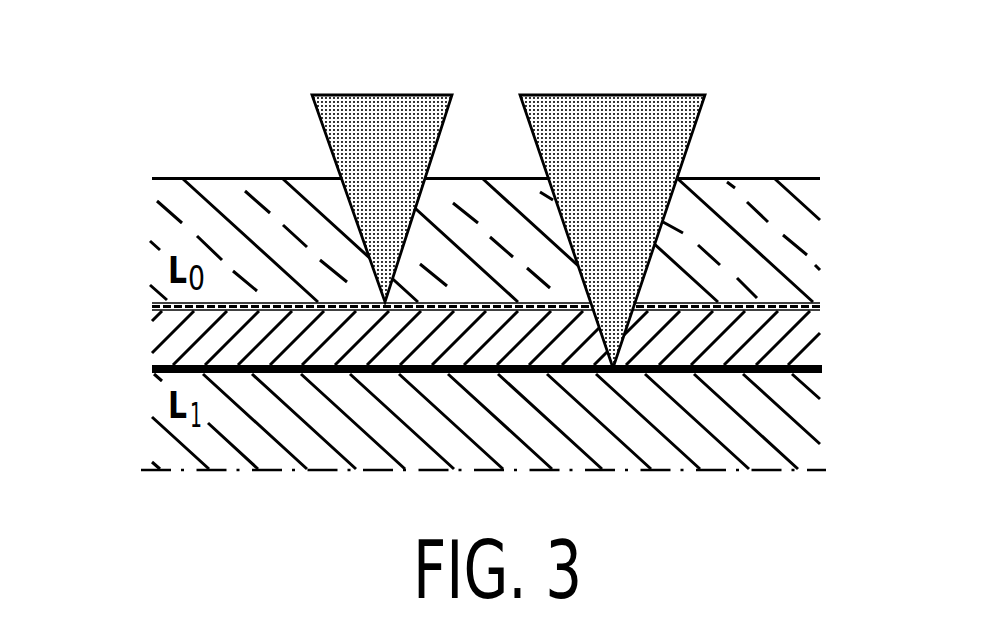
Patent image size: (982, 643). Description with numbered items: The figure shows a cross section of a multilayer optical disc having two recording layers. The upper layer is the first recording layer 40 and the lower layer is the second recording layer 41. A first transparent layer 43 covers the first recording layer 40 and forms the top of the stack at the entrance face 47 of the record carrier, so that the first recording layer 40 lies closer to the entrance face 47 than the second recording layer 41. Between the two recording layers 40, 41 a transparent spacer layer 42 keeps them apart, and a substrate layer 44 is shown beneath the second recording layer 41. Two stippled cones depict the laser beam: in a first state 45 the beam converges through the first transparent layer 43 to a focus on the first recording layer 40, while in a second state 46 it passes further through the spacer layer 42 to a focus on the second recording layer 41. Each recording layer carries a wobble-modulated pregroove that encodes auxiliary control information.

The first recording layer 40 is at (820, 304).
The second recording layer 41 is at (820, 369).
The transparent spacer layer 42 is at (152, 337).
The first transparent layer 43 is at (152, 227).
The substrate layer 44 is at (152, 440).
The laser beam in a first state 45 is at (371, 93).
The laser beam in a second state 46 is at (615, 93).
The entrance face 47 is at (762, 178).